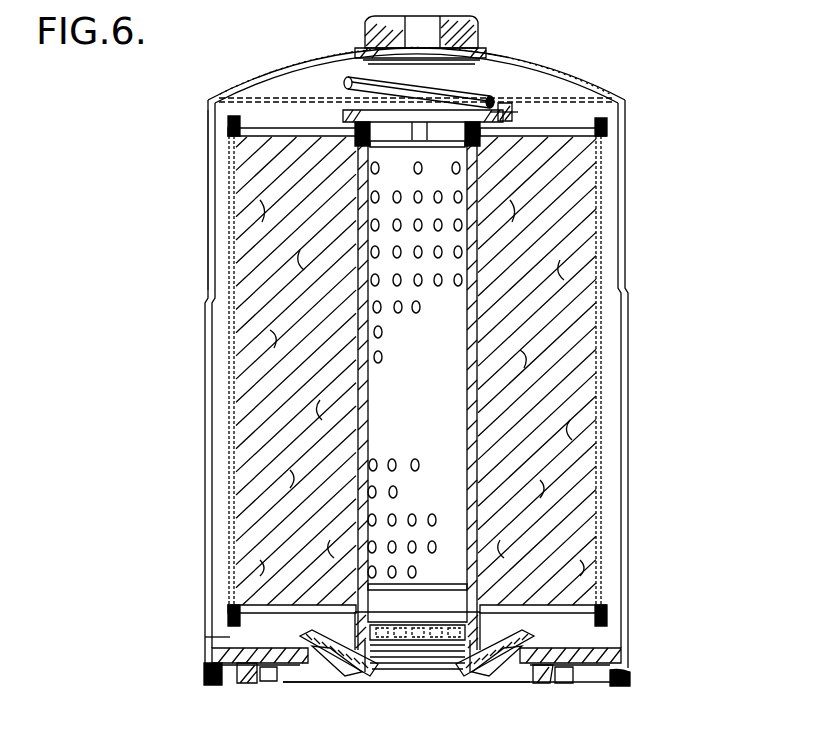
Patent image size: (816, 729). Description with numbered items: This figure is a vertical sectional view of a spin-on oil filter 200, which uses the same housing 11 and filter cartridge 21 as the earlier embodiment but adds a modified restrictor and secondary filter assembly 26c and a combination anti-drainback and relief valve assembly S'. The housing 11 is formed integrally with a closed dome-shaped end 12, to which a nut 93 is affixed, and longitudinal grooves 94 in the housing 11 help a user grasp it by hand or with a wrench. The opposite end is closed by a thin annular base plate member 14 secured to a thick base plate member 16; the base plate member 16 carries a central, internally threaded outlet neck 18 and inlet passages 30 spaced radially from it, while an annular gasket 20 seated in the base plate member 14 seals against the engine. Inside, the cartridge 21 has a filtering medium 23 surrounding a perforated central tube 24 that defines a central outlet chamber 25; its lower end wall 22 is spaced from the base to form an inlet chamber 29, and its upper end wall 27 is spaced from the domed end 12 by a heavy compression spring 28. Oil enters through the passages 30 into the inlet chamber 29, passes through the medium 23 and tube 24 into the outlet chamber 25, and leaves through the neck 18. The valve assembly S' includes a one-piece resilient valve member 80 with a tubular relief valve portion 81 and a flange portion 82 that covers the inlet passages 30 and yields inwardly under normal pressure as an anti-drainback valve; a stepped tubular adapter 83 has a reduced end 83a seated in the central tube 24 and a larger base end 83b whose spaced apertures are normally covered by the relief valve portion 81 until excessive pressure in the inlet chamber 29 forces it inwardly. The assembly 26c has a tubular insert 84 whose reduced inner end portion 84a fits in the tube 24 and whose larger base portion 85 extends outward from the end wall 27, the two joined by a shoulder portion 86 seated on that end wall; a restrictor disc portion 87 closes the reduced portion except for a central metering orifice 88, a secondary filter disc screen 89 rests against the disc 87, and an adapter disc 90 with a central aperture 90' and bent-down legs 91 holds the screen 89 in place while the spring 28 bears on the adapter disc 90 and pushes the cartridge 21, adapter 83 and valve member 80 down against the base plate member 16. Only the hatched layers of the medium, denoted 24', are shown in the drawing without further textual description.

The housing 11 is at (628, 418).
The dome-shaped end 12 is at (556, 78).
The base plate member 14 is at (245, 683).
The base plate member 16 is at (628, 656).
The outlet neck 18 is at (372, 656).
The annular gasket 20 is at (572, 685).
The filter cartridge 21 is at (622, 266).
The end wall 22 is at (258, 606).
The filtering medium 23 is at (578, 508).
The perforated central tube 24 is at (503, 313).
The filter element layer 24' is at (511, 326).
The central outlet chamber 25 is at (428, 438).
The restrictor and secondary filter assembly 26c is at (516, 116).
The end wall 27 is at (283, 128).
The compression spring 28 is at (356, 60).
The inlet chamber 29 is at (205, 637).
The inlet passages 30 is at (506, 676).
The valve member 80 is at (300, 641).
The tubular relief valve portion 81 is at (392, 650).
The flange portion 82 is at (508, 650).
The stepped tubular adapter 83 is at (393, 631).
The reduced end 83a is at (372, 606).
The base end 83b is at (498, 612).
The tubular insert 84 is at (343, 121).
The reduced inner tubular end portion 84a is at (485, 146).
The tubular base portion 85 is at (510, 104).
The shoulder portion 86 is at (319, 156).
The restrictor disc portion 87 is at (394, 175).
The metering orifice 88 is at (437, 168).
The secondary filter disc screen 89 is at (478, 170).
The adapter disc 90 is at (400, 93).
The central aperture 90' is at (448, 85).
The legs 91 is at (408, 122).
The nut 93 is at (470, 20).
The longitudinal grooves 94 is at (208, 154).
The filter 200 is at (631, 352).
The combination anti-drainback and relief valve assembly S' is at (497, 629).